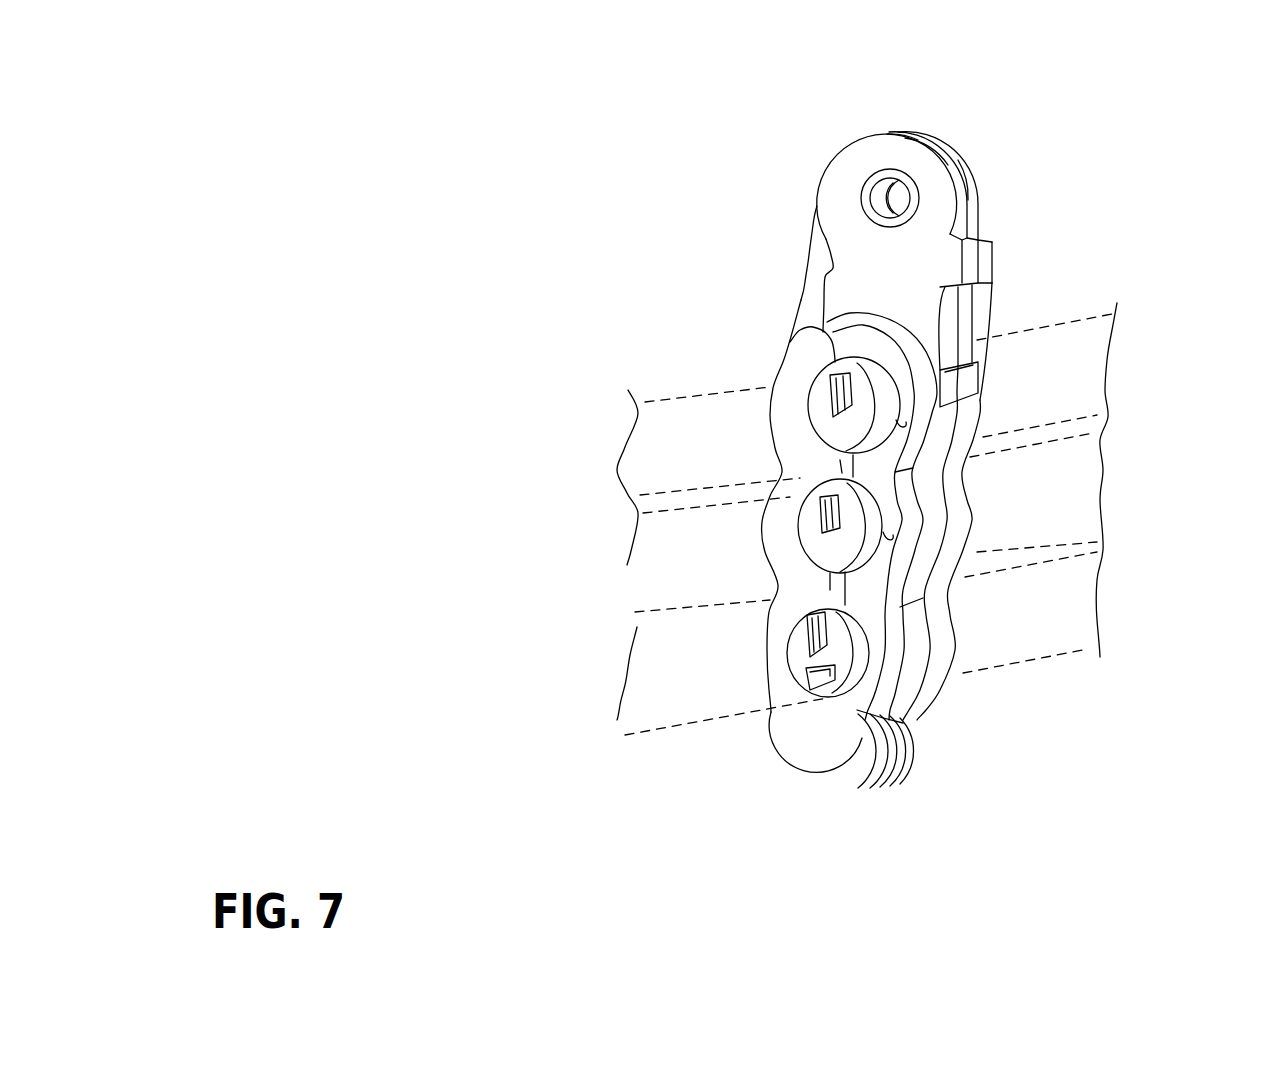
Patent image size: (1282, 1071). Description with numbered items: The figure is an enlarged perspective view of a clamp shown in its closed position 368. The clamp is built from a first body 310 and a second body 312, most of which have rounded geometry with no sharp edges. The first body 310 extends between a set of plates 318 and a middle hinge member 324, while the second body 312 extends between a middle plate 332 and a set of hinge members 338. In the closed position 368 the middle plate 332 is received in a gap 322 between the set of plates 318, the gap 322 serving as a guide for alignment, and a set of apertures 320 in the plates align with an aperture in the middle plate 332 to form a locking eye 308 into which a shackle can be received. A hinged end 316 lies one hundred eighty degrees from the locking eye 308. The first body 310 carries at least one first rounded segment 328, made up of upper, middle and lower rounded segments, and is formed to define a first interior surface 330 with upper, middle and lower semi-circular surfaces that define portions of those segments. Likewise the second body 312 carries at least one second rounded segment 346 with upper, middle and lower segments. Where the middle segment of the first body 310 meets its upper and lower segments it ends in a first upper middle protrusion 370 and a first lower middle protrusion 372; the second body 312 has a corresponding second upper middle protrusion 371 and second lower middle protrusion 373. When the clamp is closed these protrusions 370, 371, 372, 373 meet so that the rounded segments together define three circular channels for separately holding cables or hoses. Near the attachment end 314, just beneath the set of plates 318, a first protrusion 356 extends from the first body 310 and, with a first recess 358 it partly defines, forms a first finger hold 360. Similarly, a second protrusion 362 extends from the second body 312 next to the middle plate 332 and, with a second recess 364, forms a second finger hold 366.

The locking eye 308 is at (916, 212).
The first body 310 is at (903, 683).
The second body 312 is at (782, 410).
The attachment end 314 is at (922, 112).
The hinged end 316 is at (773, 783).
The set of plates 318 is at (912, 136).
The set of apertures 320 is at (940, 188).
The gap 322 is at (970, 180).
The middle hinge member 324 is at (890, 757).
The first rounded segment 328 is at (893, 423).
The first interior surface 330 is at (856, 634).
The middle plate 332 is at (908, 128).
The set of hinge members 338 is at (810, 757).
The second rounded segment 346 is at (782, 475).
The first protrusion 356 is at (995, 252).
The first recess 358 is at (975, 325).
The first finger hold 360 is at (988, 300).
The second protrusion 362 is at (806, 252).
The second recess 364 is at (798, 334).
The second finger hold 366 is at (800, 268).
The closed position 368 is at (790, 197).
The first upper middle protrusion 370 is at (782, 471).
The second upper middle protrusion 371 is at (782, 471).
The first lower middle protrusion 372 is at (778, 590).
The second lower middle protrusion 373 is at (778, 590).